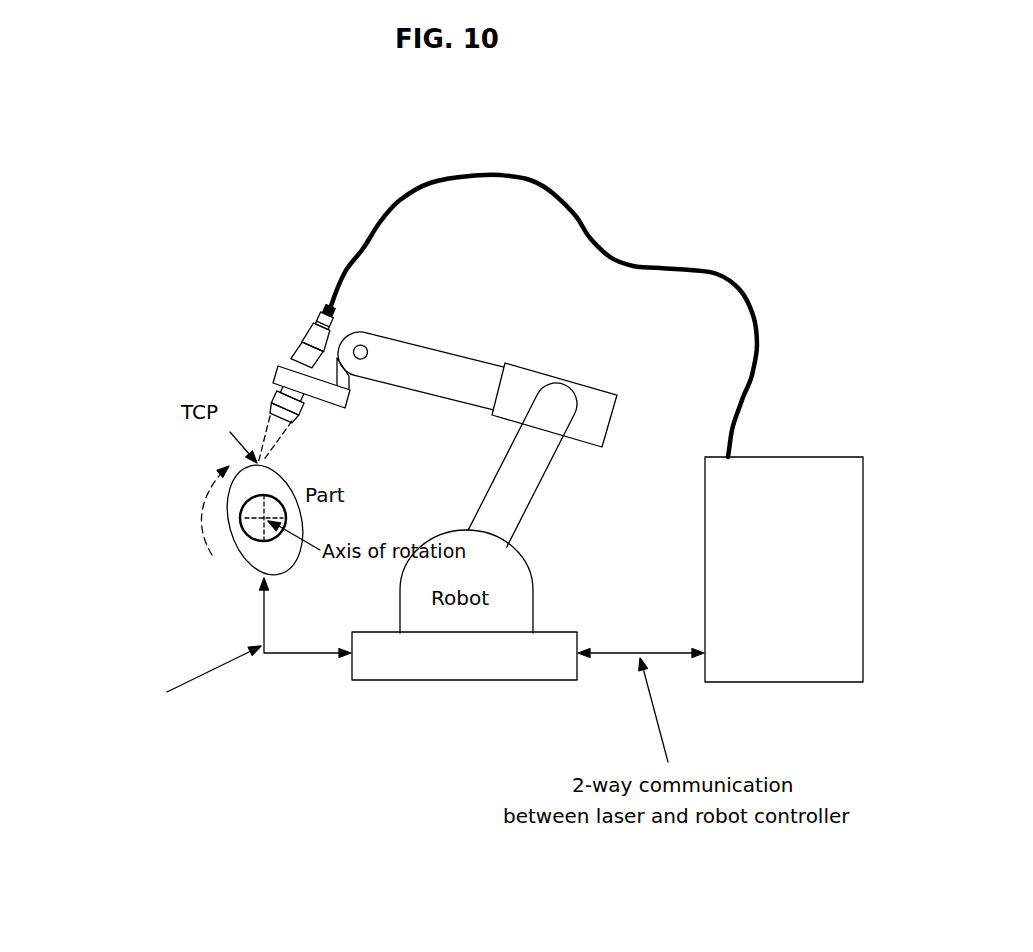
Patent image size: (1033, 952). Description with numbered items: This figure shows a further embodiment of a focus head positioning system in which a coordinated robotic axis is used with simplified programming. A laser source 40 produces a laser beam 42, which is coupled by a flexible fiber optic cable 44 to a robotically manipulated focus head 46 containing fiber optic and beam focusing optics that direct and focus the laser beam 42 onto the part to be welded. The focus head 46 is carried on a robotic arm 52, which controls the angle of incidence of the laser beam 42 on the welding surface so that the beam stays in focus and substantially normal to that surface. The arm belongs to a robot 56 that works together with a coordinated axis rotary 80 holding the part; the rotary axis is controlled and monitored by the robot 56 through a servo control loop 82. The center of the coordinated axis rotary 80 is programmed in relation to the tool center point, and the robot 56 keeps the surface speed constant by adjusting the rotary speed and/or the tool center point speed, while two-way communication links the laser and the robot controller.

The laser source 40 is at (797, 642).
The laser beam 42 is at (270, 442).
The flexible fiber optic cable 44 is at (720, 278).
The focus head 46 is at (304, 340).
The robotic arm 52 is at (423, 342).
The robot 56 is at (480, 669).
The coordinated axis rotary 80 is at (207, 540).
The servo control loop 82 is at (294, 656).